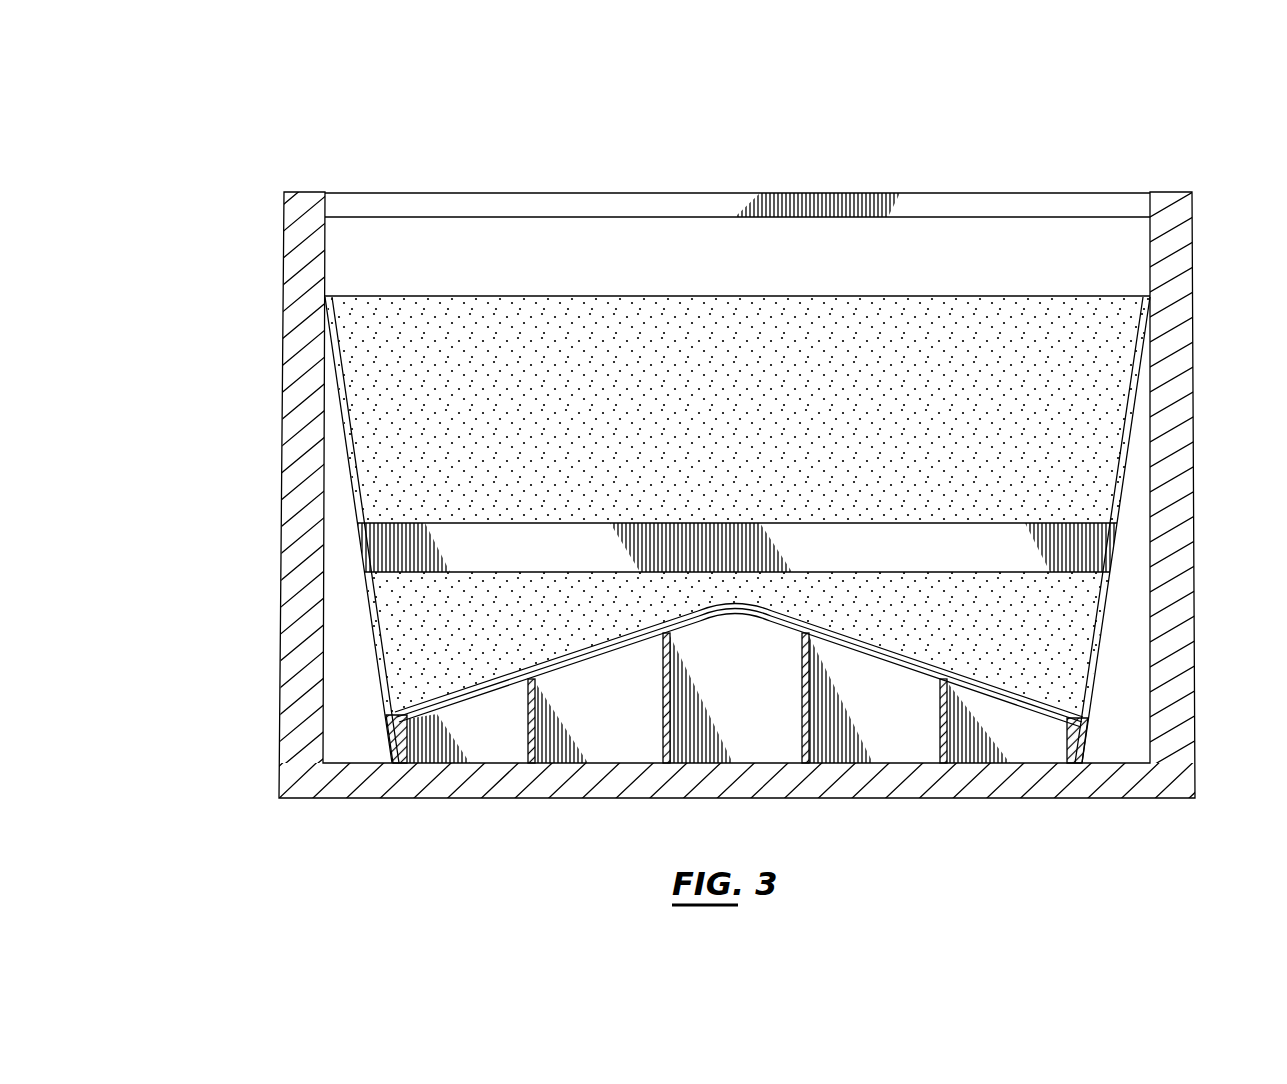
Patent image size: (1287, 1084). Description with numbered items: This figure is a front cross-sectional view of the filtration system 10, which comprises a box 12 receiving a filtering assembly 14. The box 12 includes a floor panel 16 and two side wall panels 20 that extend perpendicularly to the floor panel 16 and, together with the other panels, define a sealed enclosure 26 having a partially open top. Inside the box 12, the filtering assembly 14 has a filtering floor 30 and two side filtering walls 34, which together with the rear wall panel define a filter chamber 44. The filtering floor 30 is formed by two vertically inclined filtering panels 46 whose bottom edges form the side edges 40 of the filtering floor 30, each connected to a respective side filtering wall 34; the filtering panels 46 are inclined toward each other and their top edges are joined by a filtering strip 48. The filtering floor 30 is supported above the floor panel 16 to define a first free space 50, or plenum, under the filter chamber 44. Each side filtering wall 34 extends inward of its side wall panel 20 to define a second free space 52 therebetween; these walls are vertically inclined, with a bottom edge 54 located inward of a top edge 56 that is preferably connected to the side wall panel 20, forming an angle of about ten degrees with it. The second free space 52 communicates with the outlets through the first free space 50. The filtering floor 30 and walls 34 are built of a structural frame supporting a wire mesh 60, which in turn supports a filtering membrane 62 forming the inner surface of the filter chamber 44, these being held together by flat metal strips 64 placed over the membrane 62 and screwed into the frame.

The filtration system 10 is at (270, 172).
The box 12 is at (720, 501).
The filtering assembly 14 is at (597, 290).
The floor panel 16 is at (987, 787).
The side wall panel 20 is at (280, 741).
The sealed enclosure 26 is at (341, 728).
The filtering floor 30 is at (739, 730).
The side filtering wall 34 is at (718, 506).
The side edge 40 is at (394, 745).
The filter chamber 44 is at (530, 312).
The filtering panel 46 is at (490, 703).
The filtering strip 48 is at (735, 610).
The first free space 50 is at (760, 728).
The second free space 52 is at (350, 615).
The bottom edge 54 is at (392, 728).
The top edge 56 is at (340, 367).
The wire mesh 60 is at (472, 720).
The filtering membrane 62 is at (432, 708).
The flat metal strip 64 is at (598, 533).